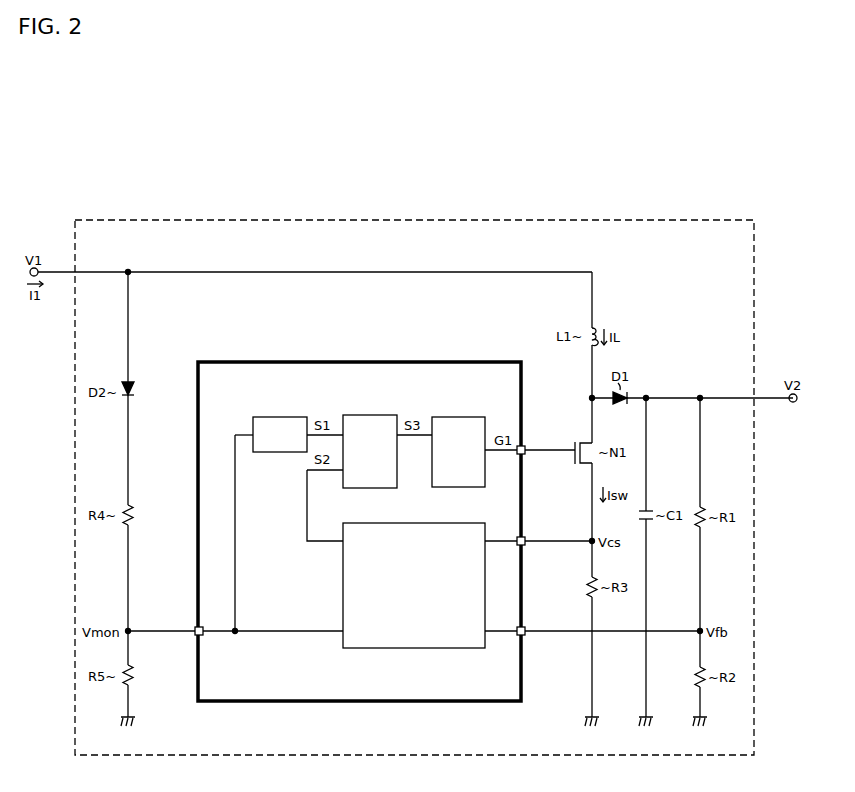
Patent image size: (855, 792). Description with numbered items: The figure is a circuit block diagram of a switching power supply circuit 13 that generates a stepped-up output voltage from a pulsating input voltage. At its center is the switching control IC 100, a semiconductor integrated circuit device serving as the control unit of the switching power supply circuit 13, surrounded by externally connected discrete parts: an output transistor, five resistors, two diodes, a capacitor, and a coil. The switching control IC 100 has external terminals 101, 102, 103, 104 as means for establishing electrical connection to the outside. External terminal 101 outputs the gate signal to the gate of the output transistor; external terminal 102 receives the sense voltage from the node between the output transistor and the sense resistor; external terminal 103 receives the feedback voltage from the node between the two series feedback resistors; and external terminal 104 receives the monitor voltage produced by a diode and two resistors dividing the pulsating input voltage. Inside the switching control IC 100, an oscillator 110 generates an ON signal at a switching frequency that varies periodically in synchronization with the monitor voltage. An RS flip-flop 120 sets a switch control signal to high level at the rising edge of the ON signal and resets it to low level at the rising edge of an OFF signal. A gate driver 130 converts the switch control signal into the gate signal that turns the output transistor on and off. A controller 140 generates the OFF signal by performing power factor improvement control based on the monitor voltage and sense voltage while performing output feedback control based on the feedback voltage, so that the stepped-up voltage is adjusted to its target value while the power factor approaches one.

The switching power supply circuit 13 is at (414, 220).
The switching control IC 100 is at (361, 362).
The oscillator 110 is at (283, 417).
The RS flip-flop 120 is at (371, 415).
The gate driver 130 is at (460, 417).
The controller 140 is at (416, 523).
The external terminal 101 is at (528, 447).
The external terminal 102 is at (528, 538).
The external terminal 103 is at (528, 628).
The external terminal 104 is at (194, 627).